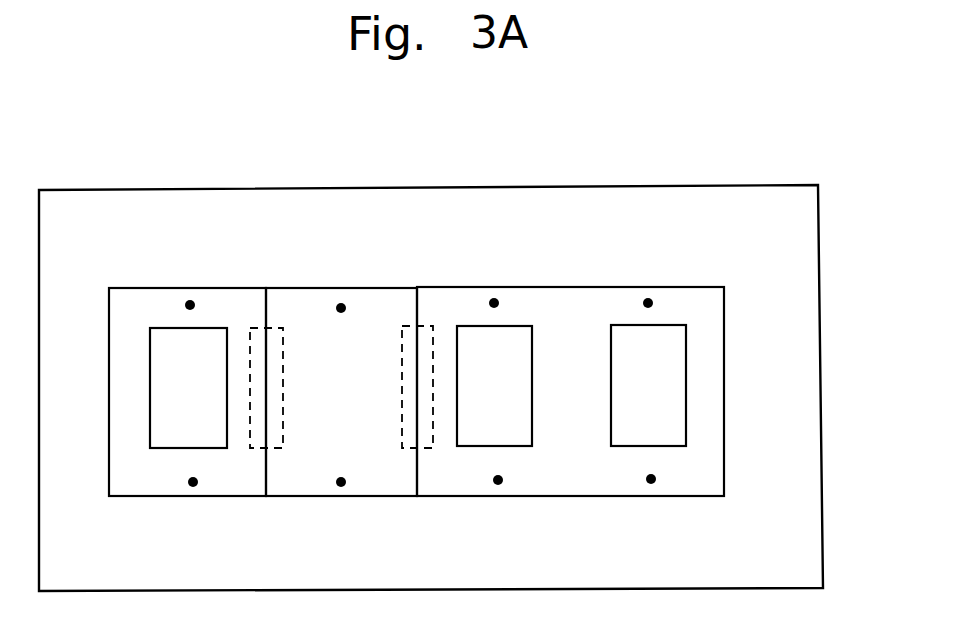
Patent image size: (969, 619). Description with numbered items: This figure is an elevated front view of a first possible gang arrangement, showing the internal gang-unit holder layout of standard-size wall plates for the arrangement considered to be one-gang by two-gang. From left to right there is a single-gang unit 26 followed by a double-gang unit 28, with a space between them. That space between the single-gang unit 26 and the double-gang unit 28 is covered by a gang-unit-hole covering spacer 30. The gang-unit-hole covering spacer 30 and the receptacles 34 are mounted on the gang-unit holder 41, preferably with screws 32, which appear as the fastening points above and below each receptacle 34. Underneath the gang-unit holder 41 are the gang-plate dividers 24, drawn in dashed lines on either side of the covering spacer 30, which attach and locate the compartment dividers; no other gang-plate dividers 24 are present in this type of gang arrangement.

The gang-unit holder 41 is at (775, 390).
The single-gang unit 26 is at (143, 495).
The gang-unit-hole covering spacer 30 is at (302, 485).
The double-gang unit 28 is at (708, 482).
The gang-plate divider 24 is at (408, 383).
The receptacle 34 is at (418, 386).
The screw 32 is at (198, 302).